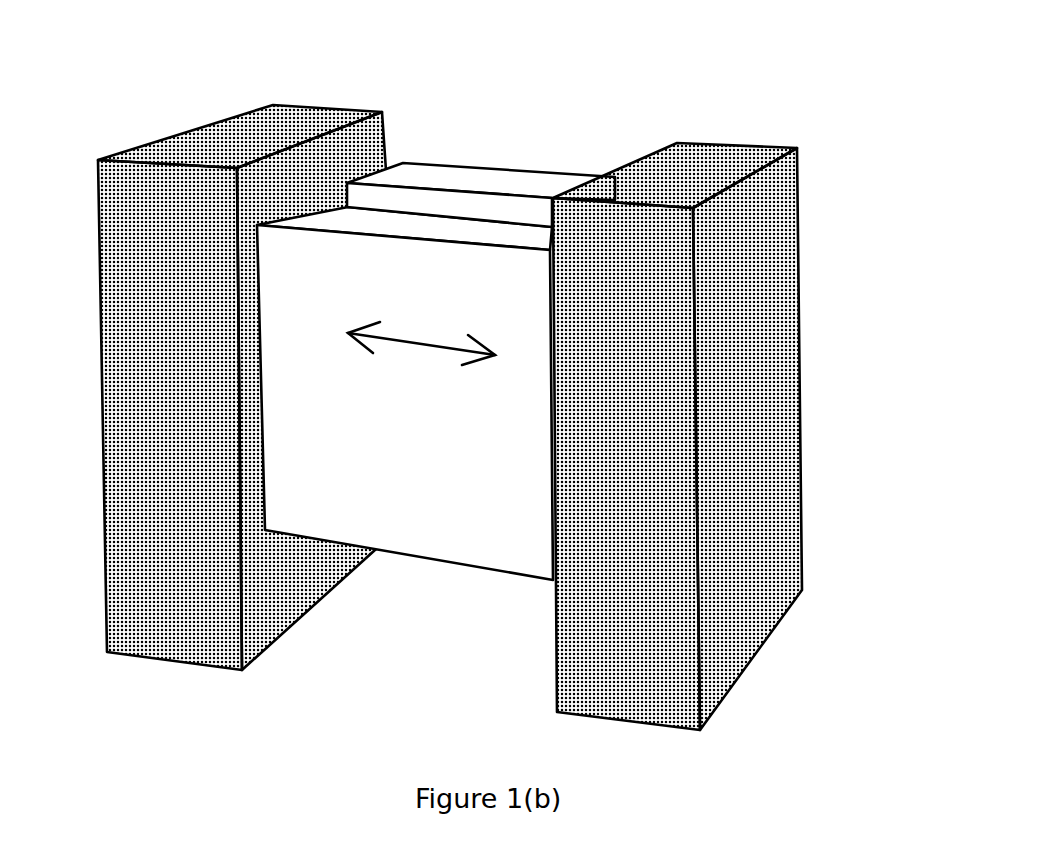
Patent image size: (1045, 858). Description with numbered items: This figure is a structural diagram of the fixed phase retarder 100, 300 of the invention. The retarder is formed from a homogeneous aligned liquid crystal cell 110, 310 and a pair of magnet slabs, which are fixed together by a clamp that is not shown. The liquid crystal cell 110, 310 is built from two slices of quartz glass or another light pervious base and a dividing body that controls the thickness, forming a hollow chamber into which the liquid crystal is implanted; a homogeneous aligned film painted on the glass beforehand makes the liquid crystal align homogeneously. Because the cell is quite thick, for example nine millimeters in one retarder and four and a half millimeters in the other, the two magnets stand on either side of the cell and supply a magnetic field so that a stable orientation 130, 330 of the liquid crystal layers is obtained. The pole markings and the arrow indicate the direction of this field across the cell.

The fixed phase retarder 100 is at (494, 400).
The fixed phase retarder 300 is at (929, 75).
The homogeneous aligned liquid crystal cell 110 is at (507, 152).
The homogeneous aligned liquid crystal cell 310 is at (495, 175).
The stable orientation of liquid crystal layers 130 is at (405, 316).
The stable orientation of liquid crystal layers 330 is at (420, 325).